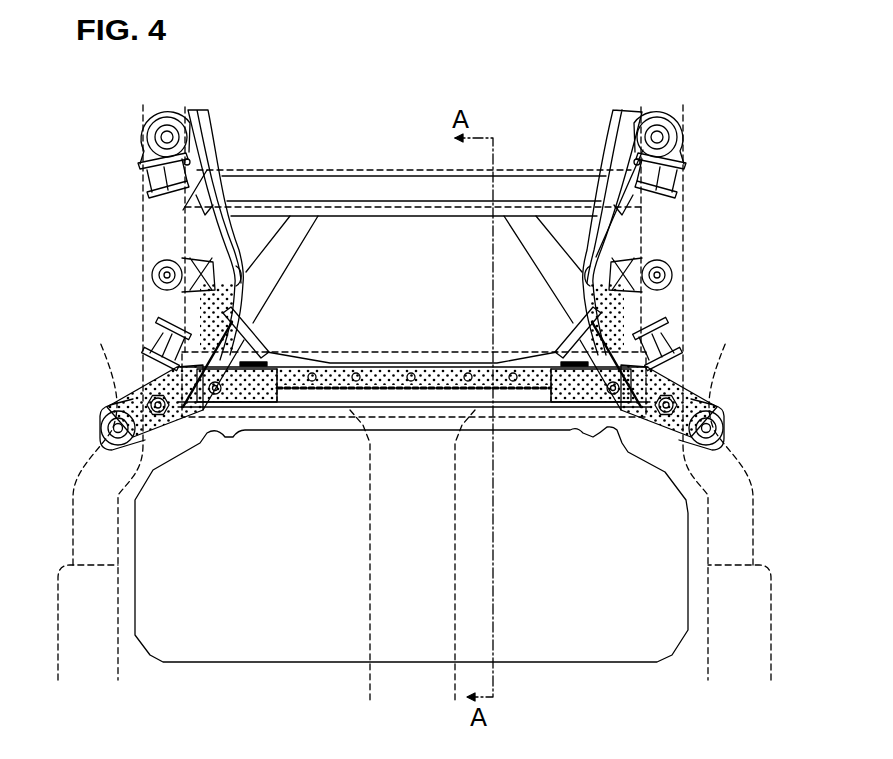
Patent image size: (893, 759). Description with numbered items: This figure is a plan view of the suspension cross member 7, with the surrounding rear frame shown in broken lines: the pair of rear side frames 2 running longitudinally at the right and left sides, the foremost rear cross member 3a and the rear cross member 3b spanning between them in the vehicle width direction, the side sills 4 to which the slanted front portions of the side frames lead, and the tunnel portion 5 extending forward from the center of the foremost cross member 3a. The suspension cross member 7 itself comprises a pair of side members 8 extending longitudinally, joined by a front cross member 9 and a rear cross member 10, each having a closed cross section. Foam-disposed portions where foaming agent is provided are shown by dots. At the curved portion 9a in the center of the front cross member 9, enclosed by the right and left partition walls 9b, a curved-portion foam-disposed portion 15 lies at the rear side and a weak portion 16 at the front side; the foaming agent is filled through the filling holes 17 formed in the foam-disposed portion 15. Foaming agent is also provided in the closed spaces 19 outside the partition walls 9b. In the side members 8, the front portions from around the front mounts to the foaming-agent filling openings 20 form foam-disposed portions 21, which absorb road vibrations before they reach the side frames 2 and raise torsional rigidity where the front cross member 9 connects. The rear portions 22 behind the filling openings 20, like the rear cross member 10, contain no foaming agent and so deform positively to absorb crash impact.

The rear side frame 2 is at (141, 259).
The foremost rear cross member 3a is at (190, 413).
The rear cross member 3b is at (357, 170).
The side sill 4 is at (55, 612).
The tunnel portion 5 is at (370, 527).
The suspension cross member 7 is at (545, 135).
The side member 8 is at (148, 369).
The front cross member 9 is at (577, 402).
The curved portion 9a is at (388, 360).
The partition wall 9b is at (278, 392).
The rear cross member 10 is at (302, 170).
The curved-portion foam-disposed portion 15 is at (428, 368).
The weak portion 16 is at (390, 420).
The filling hole 17 is at (316, 372).
The closed space 19 is at (252, 398).
The foaming-agent filling opening 20 is at (240, 277).
The foam-disposed portion 21 is at (186, 312).
The non-foaming-disposition portion 22 is at (196, 240).